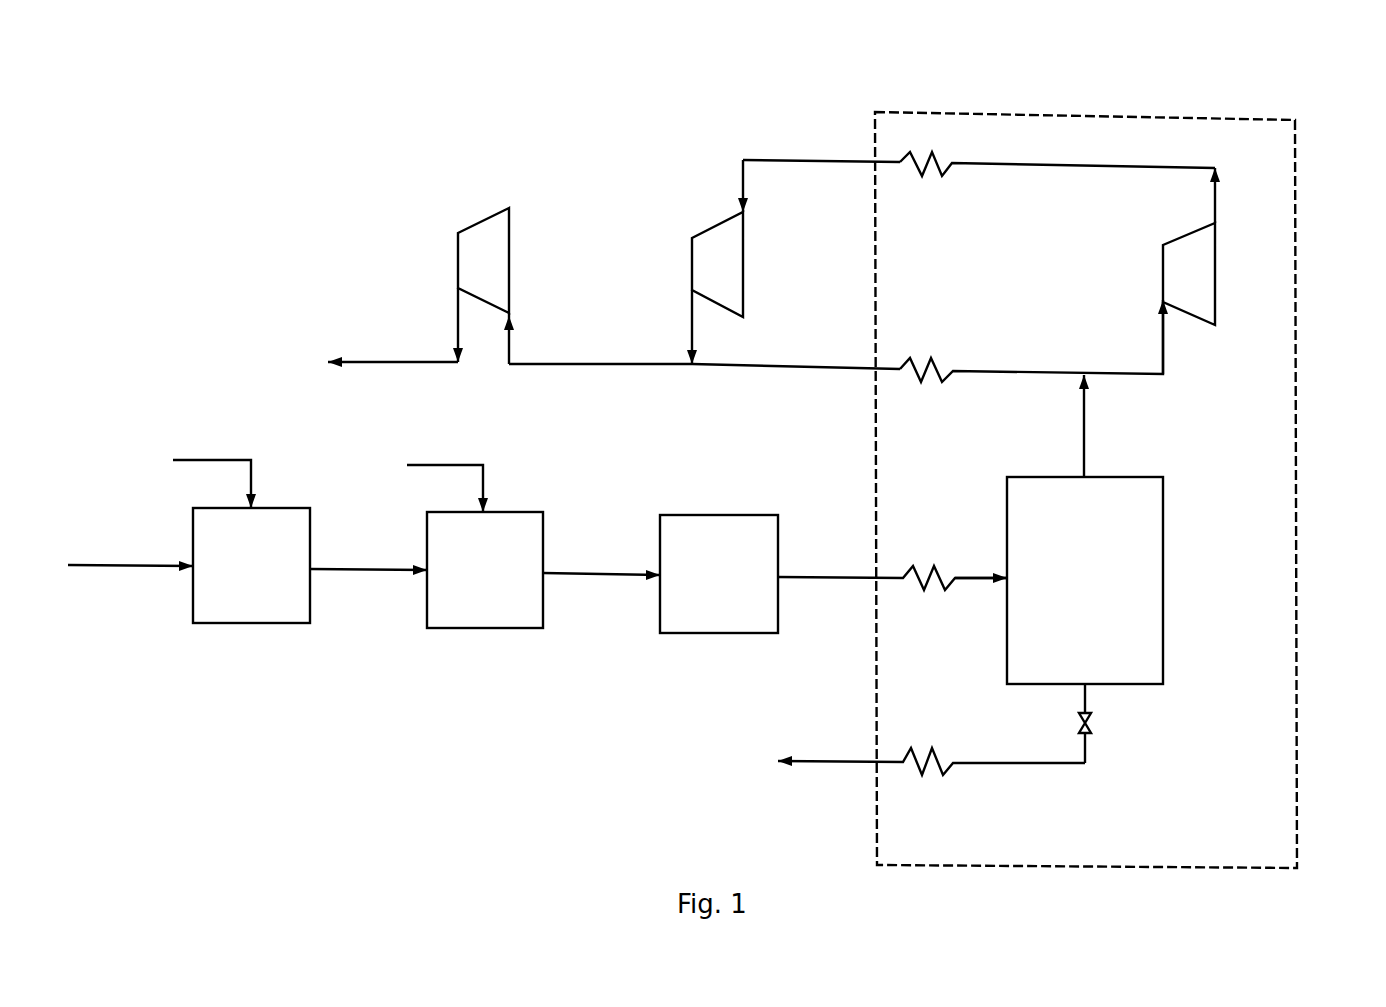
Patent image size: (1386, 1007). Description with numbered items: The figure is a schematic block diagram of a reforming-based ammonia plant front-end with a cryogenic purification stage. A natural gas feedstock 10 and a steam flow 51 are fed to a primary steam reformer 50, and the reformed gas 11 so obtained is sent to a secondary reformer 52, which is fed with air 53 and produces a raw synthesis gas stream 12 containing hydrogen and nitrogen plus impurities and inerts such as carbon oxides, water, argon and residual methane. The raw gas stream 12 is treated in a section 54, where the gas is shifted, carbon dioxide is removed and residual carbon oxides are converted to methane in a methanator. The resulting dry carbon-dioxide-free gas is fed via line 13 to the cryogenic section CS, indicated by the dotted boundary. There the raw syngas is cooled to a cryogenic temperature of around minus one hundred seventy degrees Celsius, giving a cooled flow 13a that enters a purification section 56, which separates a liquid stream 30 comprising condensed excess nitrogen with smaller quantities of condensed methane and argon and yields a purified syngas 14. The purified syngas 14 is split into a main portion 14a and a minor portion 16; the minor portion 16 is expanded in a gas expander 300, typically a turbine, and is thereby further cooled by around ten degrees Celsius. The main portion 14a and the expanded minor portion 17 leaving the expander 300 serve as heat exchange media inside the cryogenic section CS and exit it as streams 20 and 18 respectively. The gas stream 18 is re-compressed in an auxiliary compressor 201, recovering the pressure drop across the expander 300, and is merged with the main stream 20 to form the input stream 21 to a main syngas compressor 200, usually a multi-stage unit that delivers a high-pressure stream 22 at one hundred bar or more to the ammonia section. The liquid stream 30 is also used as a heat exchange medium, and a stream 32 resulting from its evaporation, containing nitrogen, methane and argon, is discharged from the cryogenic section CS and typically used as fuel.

The natural gas feedstock 10 is at (123, 567).
The reformed gas 11 is at (357, 572).
The raw synthesis gas stream 12 is at (590, 578).
The line for dry CO2-free gas 13 is at (827, 580).
The cooled flow 13a is at (965, 575).
The purified syngas 14 is at (1086, 425).
The main portion of purified syngas 14a is at (1000, 370).
The minor portion of purified syngas 16 is at (1163, 350).
The expanded minor portion 17 is at (1058, 168).
The minor purified syngas outlet stream 18 is at (798, 155).
The main stream 20 is at (793, 362).
The input stream to main syngas compressor 21 is at (583, 362).
The high-pressure stream 22 is at (378, 360).
The liquid stream 30 is at (1087, 698).
The evaporated stream 32 is at (828, 765).
The primary steam reformer 50 is at (254, 605).
The steam flow 51 is at (210, 458).
The secondary reformer 52 is at (485, 610).
The air 53 is at (442, 462).
The treatment section 54 is at (720, 615).
The purification section 56 is at (1165, 582).
The main syngas compressor 200 is at (498, 262).
The auxiliary compressor 201 is at (733, 268).
The gas expander 300 is at (1200, 280).
The cryogenic section CS is at (1297, 527).